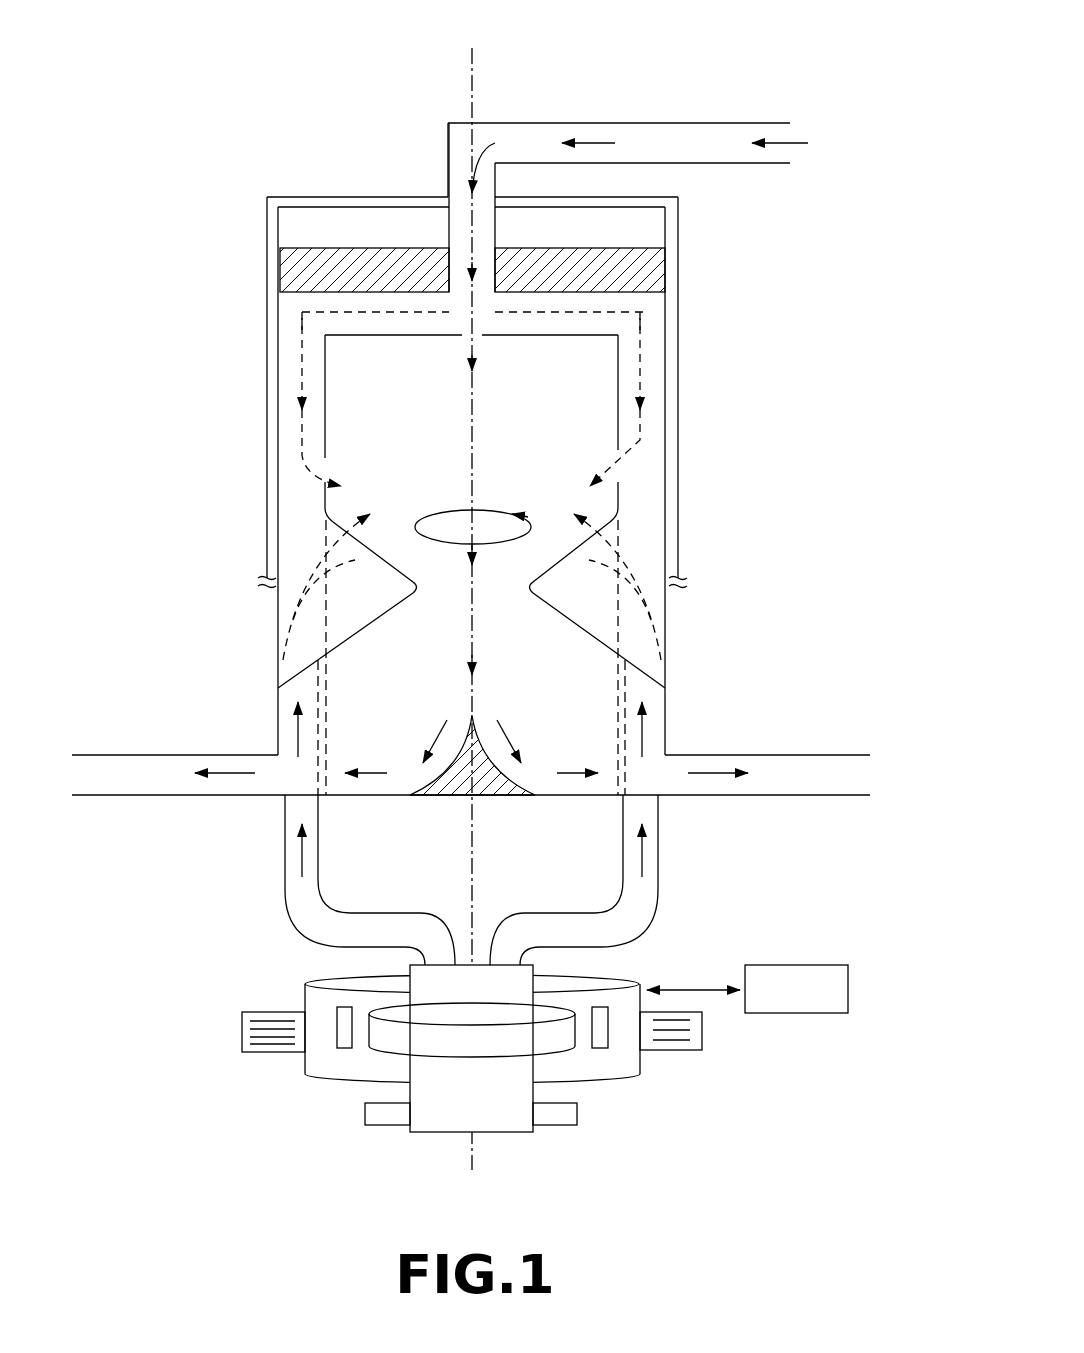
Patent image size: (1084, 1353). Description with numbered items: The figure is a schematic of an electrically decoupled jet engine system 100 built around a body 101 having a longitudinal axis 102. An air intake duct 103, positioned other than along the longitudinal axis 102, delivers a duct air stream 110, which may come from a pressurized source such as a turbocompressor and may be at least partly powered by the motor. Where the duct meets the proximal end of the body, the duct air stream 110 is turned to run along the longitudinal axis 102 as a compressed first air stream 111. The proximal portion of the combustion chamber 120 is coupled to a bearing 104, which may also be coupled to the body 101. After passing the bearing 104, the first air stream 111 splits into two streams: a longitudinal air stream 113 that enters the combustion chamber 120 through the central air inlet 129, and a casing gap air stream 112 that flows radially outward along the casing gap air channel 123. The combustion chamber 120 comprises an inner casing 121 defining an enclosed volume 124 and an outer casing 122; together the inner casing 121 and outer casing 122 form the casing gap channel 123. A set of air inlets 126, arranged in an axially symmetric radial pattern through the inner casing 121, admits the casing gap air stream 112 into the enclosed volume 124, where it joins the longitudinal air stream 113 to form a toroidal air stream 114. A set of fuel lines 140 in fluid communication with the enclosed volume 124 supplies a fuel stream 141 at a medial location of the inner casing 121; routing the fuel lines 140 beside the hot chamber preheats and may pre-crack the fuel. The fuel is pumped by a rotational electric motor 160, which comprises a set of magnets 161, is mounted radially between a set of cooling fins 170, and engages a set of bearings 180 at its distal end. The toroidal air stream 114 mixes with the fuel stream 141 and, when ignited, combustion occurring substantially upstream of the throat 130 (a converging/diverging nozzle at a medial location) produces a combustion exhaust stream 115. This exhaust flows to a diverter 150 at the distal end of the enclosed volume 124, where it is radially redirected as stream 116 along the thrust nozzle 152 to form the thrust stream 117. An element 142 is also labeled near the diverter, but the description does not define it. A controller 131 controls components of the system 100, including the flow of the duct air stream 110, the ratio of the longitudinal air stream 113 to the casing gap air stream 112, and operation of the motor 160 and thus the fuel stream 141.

The electrically decoupled jet engine system 100 is at (283, 115).
The body 101 is at (241, 422).
The longitudinal axis 102 is at (472, 85).
The air intake duct 103 is at (703, 123).
The bearing 104 is at (665, 268).
The duct air stream 110 is at (598, 141).
The first air stream 111 is at (456, 258).
The casing gap air stream 112 is at (300, 365).
The longitudinal air stream 113 is at (472, 350).
The toroidal air stream 114 is at (430, 513).
The combustion exhaust stream 115 is at (473, 652).
The radially diverted stream 116 is at (422, 763).
The thrust stream 117 is at (232, 773).
The combustion chamber 120 is at (358, 326).
The inner casing 121 is at (618, 447).
The outer casing 122 is at (665, 522).
The casing gap air channel 123 is at (648, 378).
The enclosed volume 124 is at (595, 357).
The set of air inlets 126 is at (330, 465).
The central air inlet 129 is at (456, 345).
The throat 130 is at (450, 587).
The controller 131 is at (835, 1015).
The set of fuel lines 140 is at (658, 920).
The fuel stream 141 is at (645, 855).
The guide vane 142 is at (575, 548).
The diverter 150 is at (533, 788).
The thrust nozzle 152 is at (812, 778).
The rotational electric motor 160 is at (285, 1105).
The set of magnets 161 is at (337, 1035).
The set of cooling fins 170 is at (243, 1012).
The set of bearings 180 is at (385, 1127).